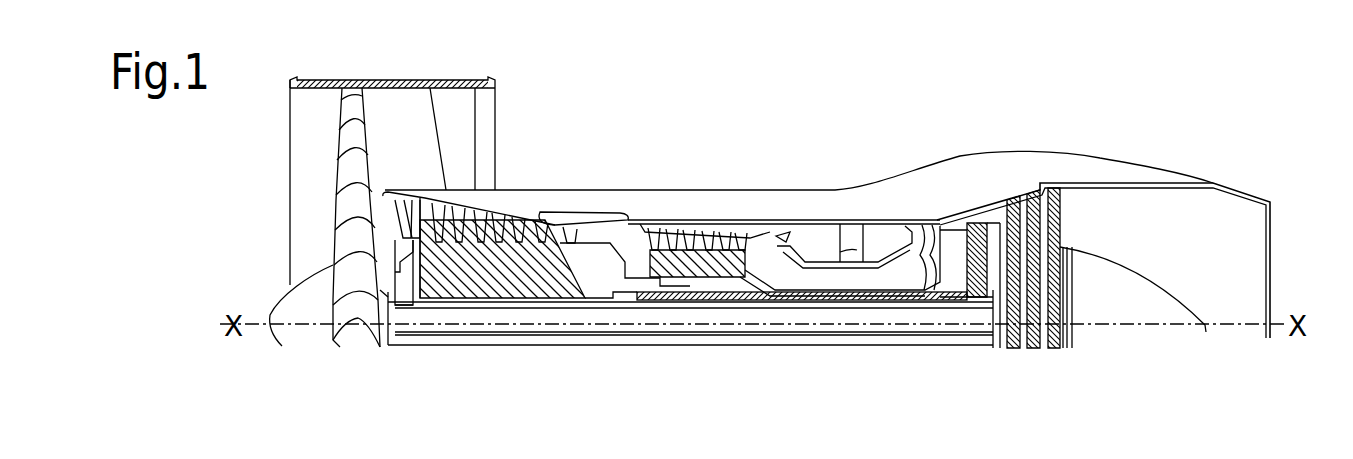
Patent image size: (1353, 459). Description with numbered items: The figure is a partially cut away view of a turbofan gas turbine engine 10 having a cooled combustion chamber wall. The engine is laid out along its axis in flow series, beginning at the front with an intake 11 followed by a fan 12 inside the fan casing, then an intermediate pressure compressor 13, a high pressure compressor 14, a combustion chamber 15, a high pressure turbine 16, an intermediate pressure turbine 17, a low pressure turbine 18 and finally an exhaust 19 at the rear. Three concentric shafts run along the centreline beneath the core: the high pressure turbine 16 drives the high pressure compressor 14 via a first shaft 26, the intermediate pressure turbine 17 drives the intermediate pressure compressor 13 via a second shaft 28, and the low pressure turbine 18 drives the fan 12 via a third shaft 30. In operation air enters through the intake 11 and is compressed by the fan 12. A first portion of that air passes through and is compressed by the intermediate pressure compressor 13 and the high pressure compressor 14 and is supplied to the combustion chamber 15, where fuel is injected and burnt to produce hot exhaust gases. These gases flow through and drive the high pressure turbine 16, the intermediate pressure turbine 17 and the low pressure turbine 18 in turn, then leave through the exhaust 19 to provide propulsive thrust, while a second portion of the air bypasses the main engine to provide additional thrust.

The turbofan gas turbine engine 10 is at (682, 152).
The intake 11 is at (262, 192).
The fan 12 is at (358, 132).
The intermediate pressure compressor 13 is at (500, 254).
The high pressure compressor 14 is at (697, 236).
The combustion chamber 15 is at (849, 216).
The high pressure turbine 16 is at (930, 222).
The intermediate pressure turbine 17 is at (977, 226).
The low pressure turbine 18 is at (1066, 220).
The exhaust 19 is at (1247, 284).
The first shaft 26 is at (900, 288).
The second shaft 28 is at (638, 299).
The third shaft 30 is at (497, 340).